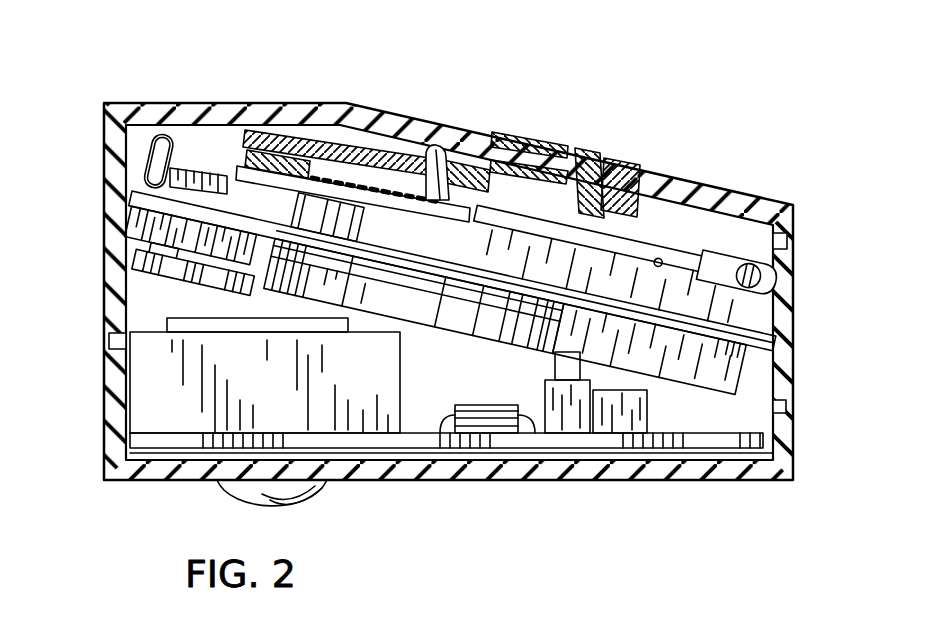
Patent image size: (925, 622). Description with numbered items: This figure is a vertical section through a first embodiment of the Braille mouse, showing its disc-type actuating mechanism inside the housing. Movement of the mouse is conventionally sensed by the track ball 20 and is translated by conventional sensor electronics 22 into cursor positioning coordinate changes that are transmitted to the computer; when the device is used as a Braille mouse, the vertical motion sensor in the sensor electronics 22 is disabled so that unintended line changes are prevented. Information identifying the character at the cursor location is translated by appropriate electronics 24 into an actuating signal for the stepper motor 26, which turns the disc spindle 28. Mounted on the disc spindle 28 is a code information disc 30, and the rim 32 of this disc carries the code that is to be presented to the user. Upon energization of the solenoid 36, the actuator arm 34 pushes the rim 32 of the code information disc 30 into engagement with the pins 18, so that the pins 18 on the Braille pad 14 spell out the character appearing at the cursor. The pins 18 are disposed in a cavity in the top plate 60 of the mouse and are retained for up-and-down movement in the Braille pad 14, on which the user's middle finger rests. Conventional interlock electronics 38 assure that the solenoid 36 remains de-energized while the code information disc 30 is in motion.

The Braille pad 14 is at (641, 163).
The pins 18 is at (604, 155).
The track ball 20 is at (252, 484).
The sensor electronics 22 is at (163, 378).
The electronics 24 is at (150, 232).
The stepper motor 26 is at (452, 307).
The disc spindle 28 is at (436, 145).
The code information disc 30 is at (337, 158).
The rim 32 is at (270, 128).
The actuator arm 34 is at (709, 255).
The solenoid 36 is at (693, 367).
The interlock electronics 38 is at (493, 420).
The top plate 60 is at (402, 148).